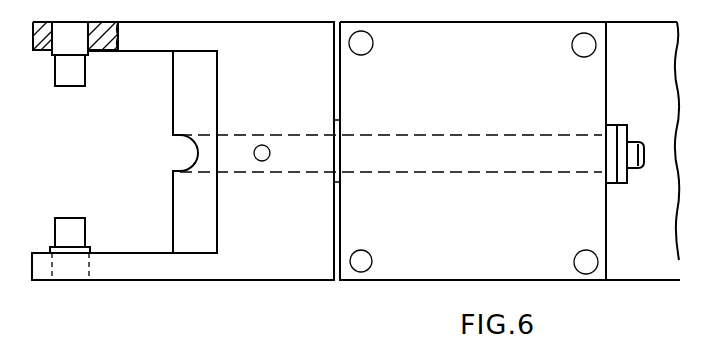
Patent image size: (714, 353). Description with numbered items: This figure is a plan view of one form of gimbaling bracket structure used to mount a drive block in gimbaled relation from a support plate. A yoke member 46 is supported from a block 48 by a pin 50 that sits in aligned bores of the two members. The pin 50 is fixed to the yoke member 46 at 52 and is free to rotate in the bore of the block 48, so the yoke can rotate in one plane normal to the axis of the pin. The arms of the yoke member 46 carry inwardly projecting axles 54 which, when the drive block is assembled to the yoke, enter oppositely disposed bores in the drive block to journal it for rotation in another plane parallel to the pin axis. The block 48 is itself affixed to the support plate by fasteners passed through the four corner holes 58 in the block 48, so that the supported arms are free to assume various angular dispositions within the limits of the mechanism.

The yoke member 46 is at (309, 274).
The block 48 is at (433, 273).
The pin 50 is at (510, 173).
The fixing point of pin to yoke 52 is at (261, 161).
The inwardly projecting axles 54 is at (65, 218).
The four corner holes 58 is at (372, 258).